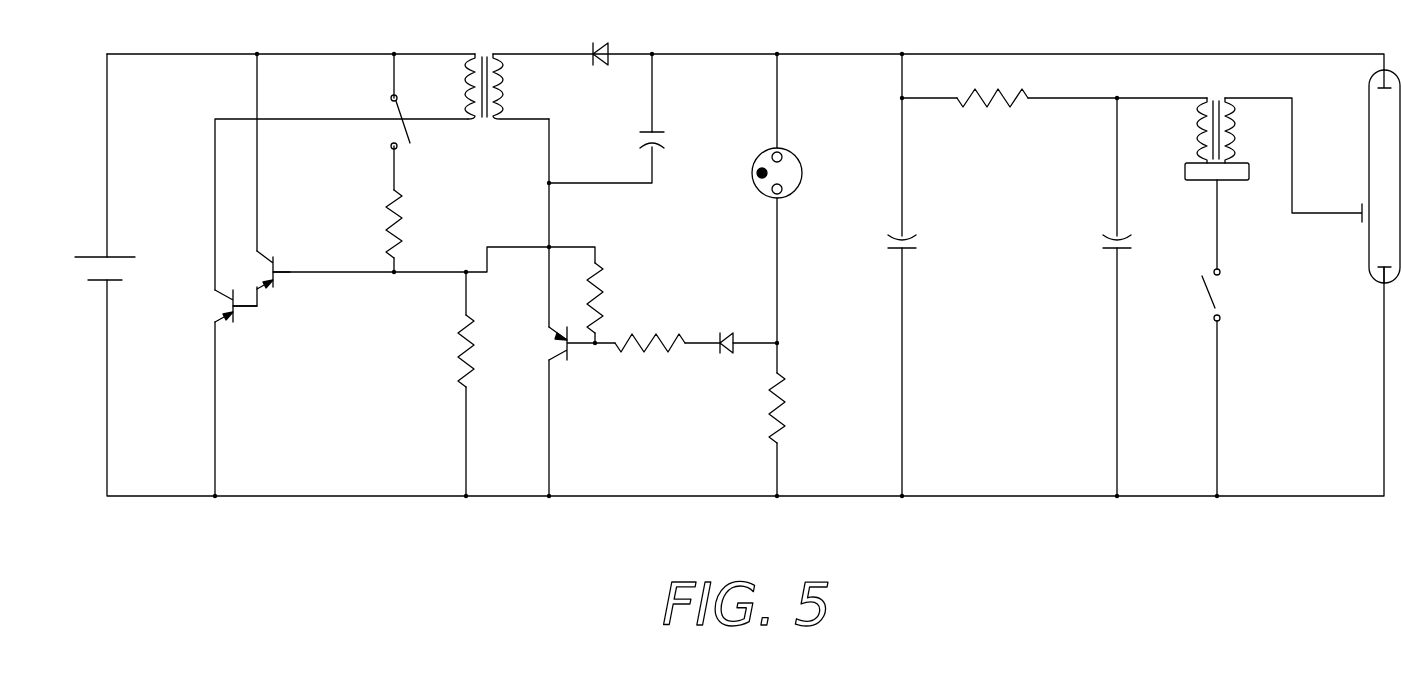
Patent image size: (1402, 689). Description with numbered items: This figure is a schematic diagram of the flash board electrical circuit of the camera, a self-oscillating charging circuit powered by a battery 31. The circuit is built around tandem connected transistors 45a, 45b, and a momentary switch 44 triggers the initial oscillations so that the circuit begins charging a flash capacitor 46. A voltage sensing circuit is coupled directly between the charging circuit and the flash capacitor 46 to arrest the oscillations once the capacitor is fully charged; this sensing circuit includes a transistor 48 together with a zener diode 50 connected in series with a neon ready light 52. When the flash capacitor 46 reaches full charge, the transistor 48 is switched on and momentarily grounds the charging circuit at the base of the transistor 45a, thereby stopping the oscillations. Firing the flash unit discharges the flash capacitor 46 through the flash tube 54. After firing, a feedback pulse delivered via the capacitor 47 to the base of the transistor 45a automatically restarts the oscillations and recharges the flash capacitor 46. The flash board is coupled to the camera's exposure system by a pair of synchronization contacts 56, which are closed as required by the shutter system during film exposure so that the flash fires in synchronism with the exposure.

The battery 31 is at (125, 253).
The momentary switch 44 is at (402, 118).
The transistor 45a is at (273, 268).
The transistor 45b is at (237, 318).
The flash capacitor 46 is at (904, 240).
The capacitor 47 is at (655, 133).
The transistor 48 is at (568, 350).
The zener diode 50 is at (720, 338).
The neon ready light 52 is at (792, 147).
The flash tube 54 is at (1370, 123).
The synchronization contacts 56 is at (1220, 270).